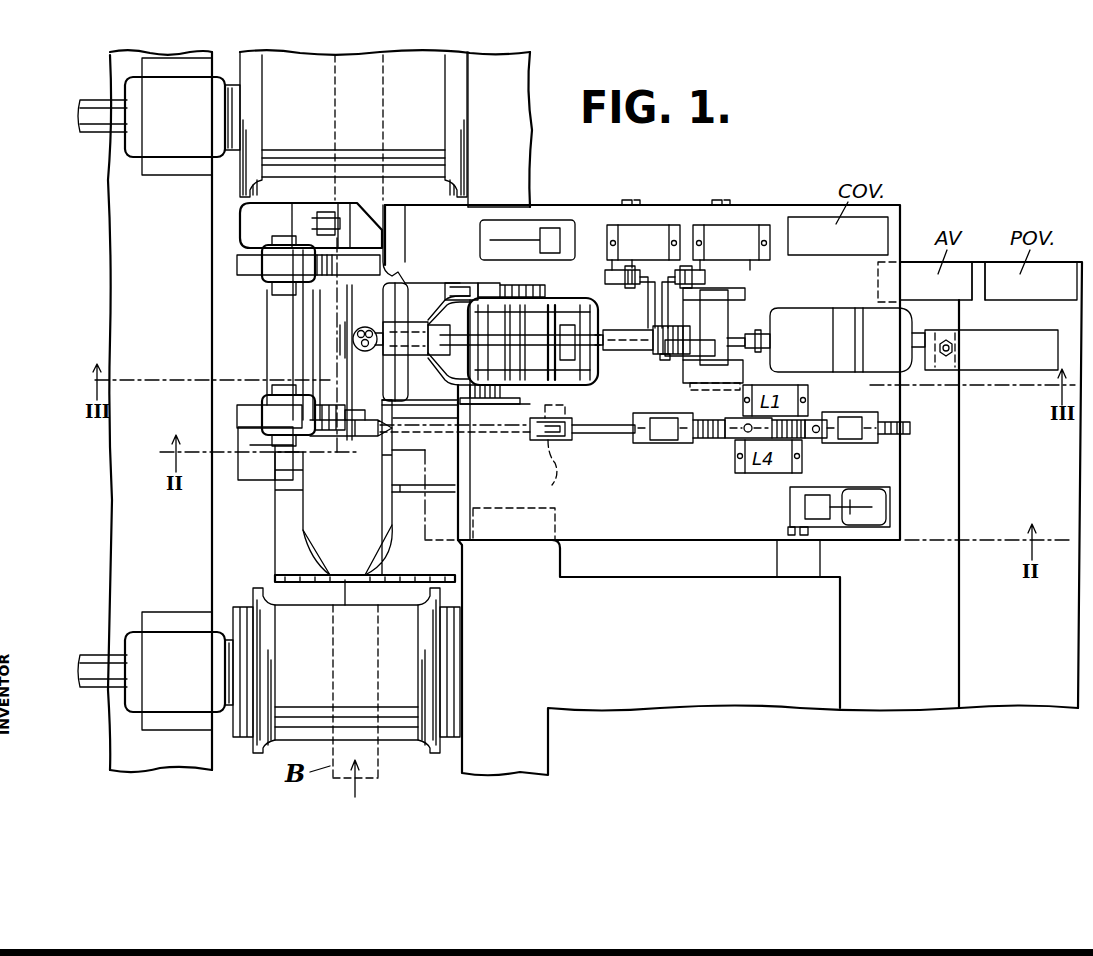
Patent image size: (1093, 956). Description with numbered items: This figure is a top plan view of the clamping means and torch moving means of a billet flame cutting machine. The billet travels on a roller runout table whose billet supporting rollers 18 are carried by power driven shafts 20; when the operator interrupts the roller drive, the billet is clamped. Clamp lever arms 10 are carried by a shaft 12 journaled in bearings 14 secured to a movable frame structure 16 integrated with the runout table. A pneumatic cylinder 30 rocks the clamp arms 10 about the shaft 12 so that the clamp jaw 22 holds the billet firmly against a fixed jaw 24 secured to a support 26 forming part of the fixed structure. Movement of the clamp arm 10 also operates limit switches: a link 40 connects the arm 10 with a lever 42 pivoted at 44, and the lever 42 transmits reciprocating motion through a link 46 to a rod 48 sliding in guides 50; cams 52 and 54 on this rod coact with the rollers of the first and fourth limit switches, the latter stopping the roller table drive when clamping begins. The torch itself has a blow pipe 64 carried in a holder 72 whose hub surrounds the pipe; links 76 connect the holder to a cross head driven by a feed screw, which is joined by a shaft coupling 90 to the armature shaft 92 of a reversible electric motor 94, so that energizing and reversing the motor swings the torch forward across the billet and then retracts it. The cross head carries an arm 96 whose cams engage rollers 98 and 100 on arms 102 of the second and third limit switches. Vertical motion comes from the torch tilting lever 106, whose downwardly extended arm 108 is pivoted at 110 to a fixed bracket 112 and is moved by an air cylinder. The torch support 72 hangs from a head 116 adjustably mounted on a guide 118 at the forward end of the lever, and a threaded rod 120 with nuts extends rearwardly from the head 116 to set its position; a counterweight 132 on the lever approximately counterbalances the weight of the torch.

The clamp lever arm 10 is at (246, 264).
The shaft 12 is at (272, 330).
The bearing 14 is at (247, 228).
The movable frame structure 16 is at (638, 660).
The billet supporting roller 18 is at (312, 99).
The power driven shaft 20 is at (93, 103).
The clamp jaw 22 is at (265, 278).
The fixed jaw 24 is at (388, 492).
The support 26 is at (437, 520).
The cylinder 30 is at (724, 203).
The link 40 is at (503, 435).
The lever 42 is at (546, 443).
The pivot 44 is at (565, 471).
The link 46 is at (620, 433).
The rod 48 is at (705, 438).
The guide 50 is at (655, 443).
The cam 52 is at (732, 438).
The cam 54 is at (815, 438).
The blow pipe 64 is at (352, 342).
The holder 72 is at (371, 326).
The link 76 is at (552, 310).
The shaft coupling 90 is at (729, 320).
The armature shaft 92 is at (760, 340).
The reversible electric motor 94 is at (843, 318).
The arm 96 is at (652, 302).
The roller 98 is at (606, 277).
The roller 100 is at (706, 275).
The arm 102 is at (614, 268).
The torch tilting lever 106 is at (680, 350).
The arm 108 is at (473, 286).
The pivot 110 is at (497, 285).
The fixed bracket 112 is at (537, 290).
The head 116 is at (402, 348).
The guide 118 is at (397, 325).
The threaded rod 120 is at (448, 360).
The counterweight 132 is at (628, 343).